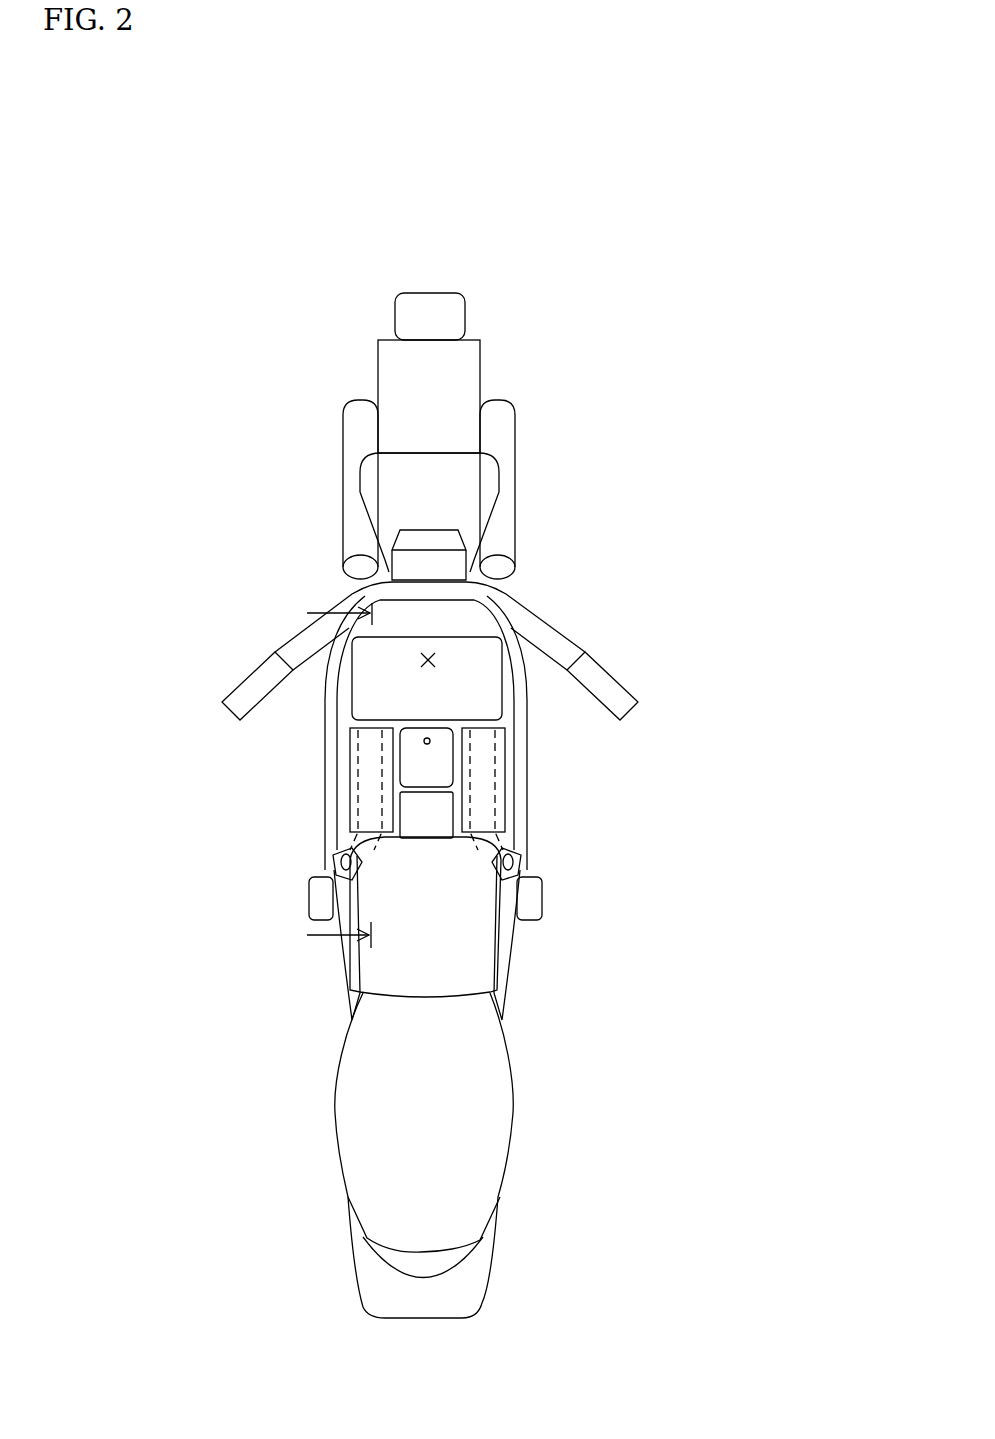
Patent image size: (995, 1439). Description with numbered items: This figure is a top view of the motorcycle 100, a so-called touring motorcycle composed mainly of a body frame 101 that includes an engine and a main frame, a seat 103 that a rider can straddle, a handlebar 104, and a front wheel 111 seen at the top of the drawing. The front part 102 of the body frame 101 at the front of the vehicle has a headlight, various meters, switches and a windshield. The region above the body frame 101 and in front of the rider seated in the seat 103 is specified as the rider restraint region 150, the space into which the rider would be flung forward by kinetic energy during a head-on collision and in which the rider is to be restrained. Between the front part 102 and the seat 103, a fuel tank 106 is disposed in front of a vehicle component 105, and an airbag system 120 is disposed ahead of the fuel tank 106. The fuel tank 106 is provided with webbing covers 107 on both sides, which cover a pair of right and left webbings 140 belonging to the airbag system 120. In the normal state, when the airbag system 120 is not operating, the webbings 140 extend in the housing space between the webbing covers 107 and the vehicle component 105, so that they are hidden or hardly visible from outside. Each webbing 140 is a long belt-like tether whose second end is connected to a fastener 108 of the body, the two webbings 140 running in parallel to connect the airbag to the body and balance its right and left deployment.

The motorcycle 100 is at (668, 492).
The front wheel 111 is at (430, 313).
The front part 102 is at (388, 537).
The handlebar 104 is at (603, 668).
The body frame 101 is at (322, 722).
The airbag system 120 is at (506, 708).
The rider restraint region 150 is at (432, 658).
The fuel tank 106 is at (408, 748).
The vehicle component 105 is at (443, 808).
The webbing cover 107 is at (352, 777).
The webbing 140 is at (372, 760).
The fastener 108 is at (323, 867).
The seat 103 is at (490, 1137).